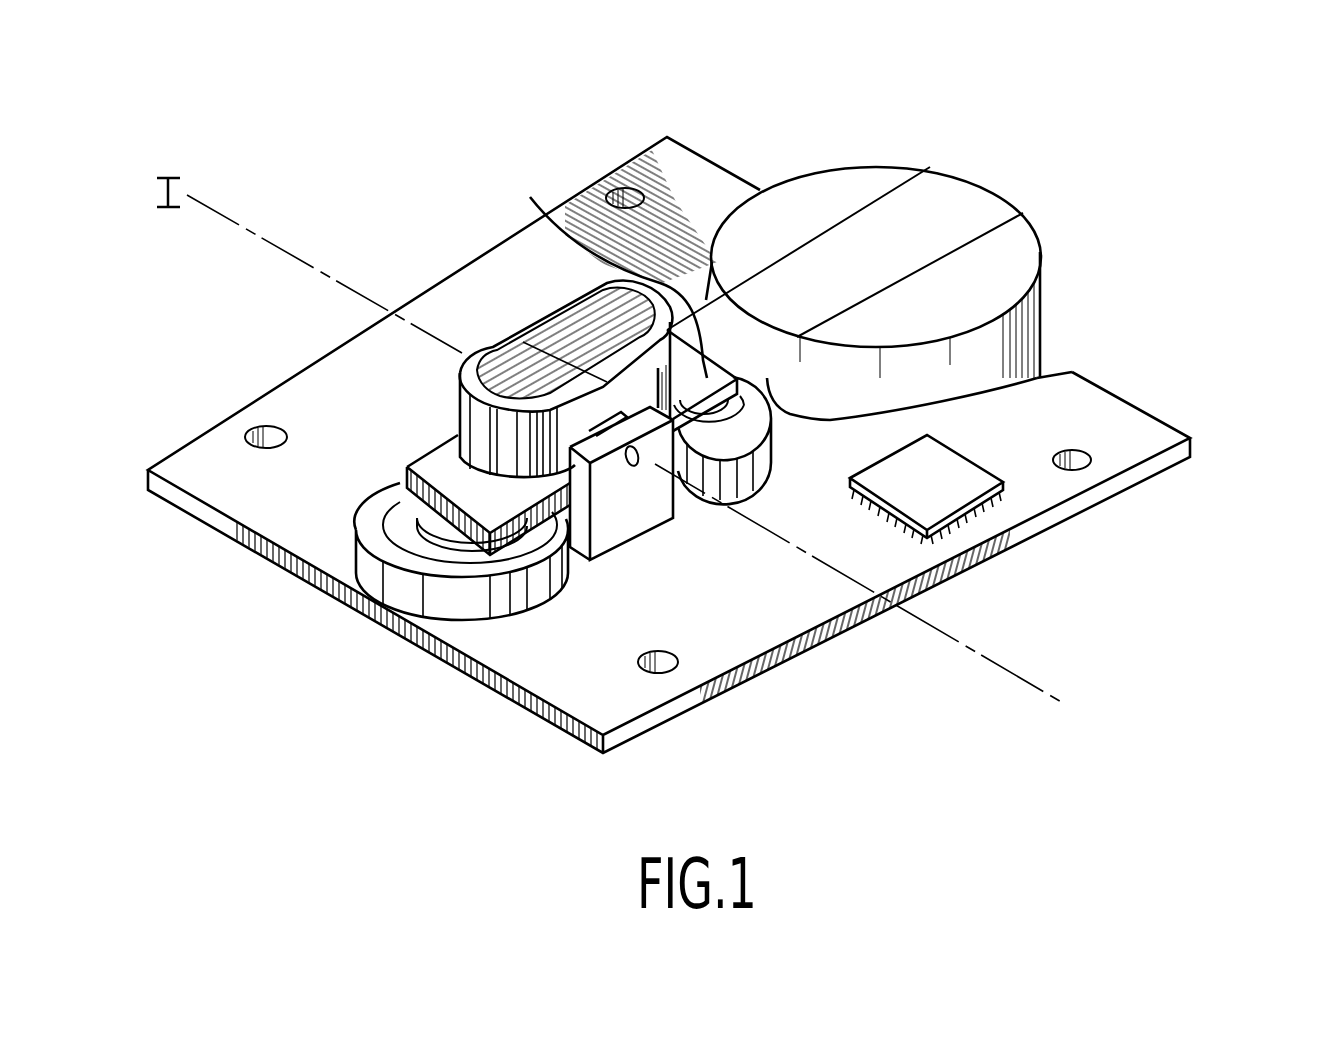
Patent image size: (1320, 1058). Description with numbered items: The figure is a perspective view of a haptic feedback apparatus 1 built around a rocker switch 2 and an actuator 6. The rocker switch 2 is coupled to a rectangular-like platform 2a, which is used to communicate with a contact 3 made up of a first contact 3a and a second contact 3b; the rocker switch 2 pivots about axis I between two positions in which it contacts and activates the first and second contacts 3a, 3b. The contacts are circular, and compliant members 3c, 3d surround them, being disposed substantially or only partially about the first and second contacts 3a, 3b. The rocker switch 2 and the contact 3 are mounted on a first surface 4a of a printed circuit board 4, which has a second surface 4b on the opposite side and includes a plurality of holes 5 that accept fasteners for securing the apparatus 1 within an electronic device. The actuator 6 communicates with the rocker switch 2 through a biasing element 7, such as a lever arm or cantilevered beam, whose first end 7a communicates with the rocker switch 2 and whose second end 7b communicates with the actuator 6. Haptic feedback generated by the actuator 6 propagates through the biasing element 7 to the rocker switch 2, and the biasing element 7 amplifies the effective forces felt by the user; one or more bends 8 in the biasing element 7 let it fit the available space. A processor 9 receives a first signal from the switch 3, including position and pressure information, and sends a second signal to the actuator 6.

The apparatus 1 is at (240, 190).
The rocker switch 2 is at (507, 368).
The platform 2a is at (435, 470).
The contact 3 is at (623, 566).
The first contact 3a is at (413, 522).
The second contact 3b is at (760, 437).
The compliant member 3c is at (380, 580).
The compliant member 3d is at (758, 474).
The printed circuit board 4 is at (691, 437).
The first surface 4a is at (548, 678).
The second surface 4b is at (1180, 463).
The holes 5 is at (624, 196).
The actuator 6 is at (898, 246).
The biasing element 7 is at (847, 204).
The first end 7a is at (734, 328).
The second end 7b is at (953, 213).
The bends 8 is at (843, 263).
The processor 9 is at (935, 495).